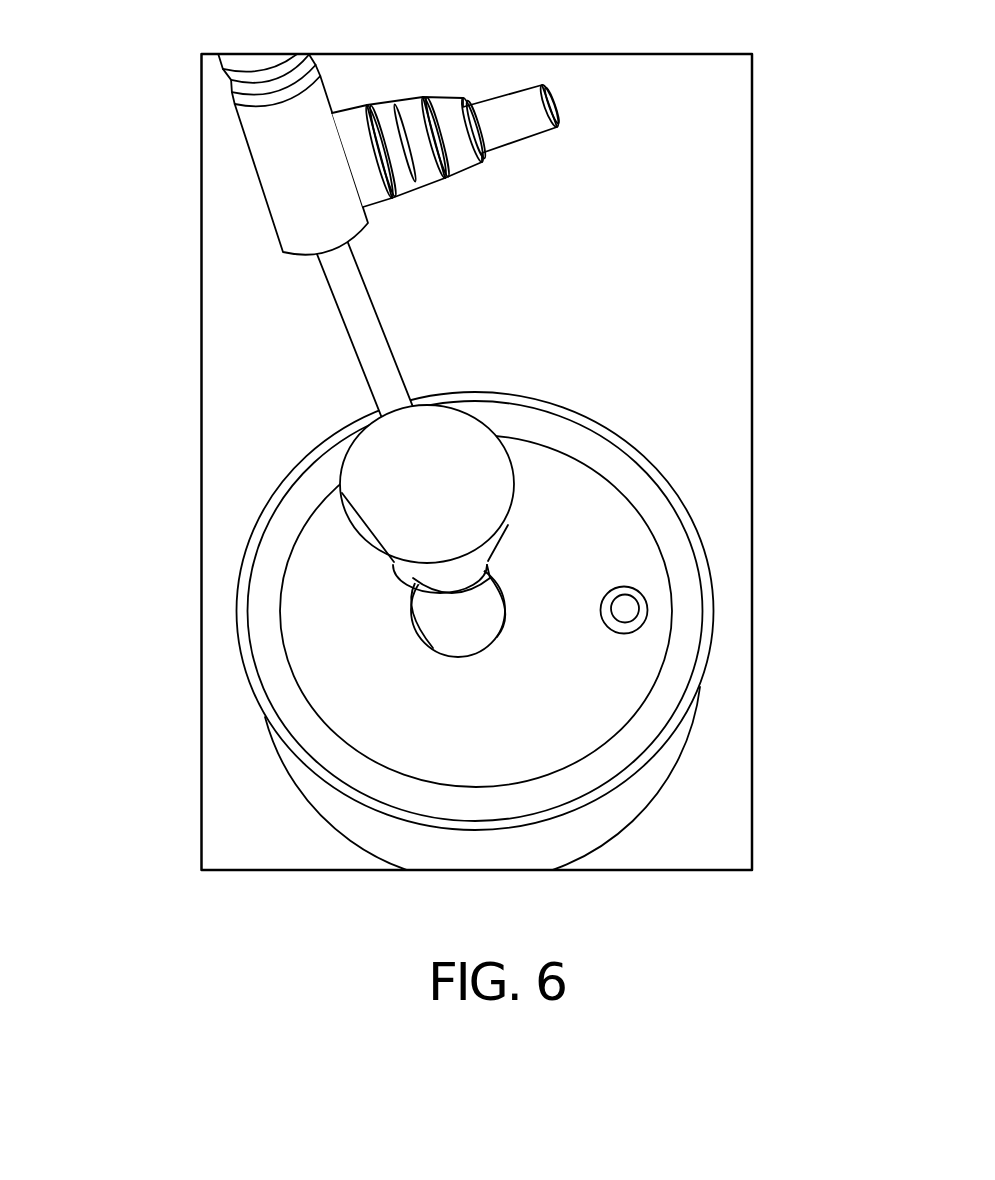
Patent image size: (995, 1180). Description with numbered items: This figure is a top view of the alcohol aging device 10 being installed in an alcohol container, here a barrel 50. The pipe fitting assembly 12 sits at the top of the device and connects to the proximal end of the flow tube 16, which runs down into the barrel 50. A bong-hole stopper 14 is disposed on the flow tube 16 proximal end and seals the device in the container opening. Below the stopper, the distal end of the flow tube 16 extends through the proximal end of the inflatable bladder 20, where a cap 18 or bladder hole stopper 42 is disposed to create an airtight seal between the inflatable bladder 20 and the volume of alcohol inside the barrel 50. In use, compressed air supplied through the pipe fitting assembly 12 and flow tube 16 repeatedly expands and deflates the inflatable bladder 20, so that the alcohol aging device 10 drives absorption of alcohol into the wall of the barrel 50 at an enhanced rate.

The alcohol aging device 10 is at (447, 451).
The pipe fitting assembly 12 is at (462, 84).
The bong-hole stopper 14 is at (480, 442).
The flow tube 16 is at (378, 334).
The cap 18 is at (261, 579).
The bladder hole stopper 42 is at (450, 593).
The inflatable bladder 20 is at (480, 626).
The barrel 50 is at (706, 576).